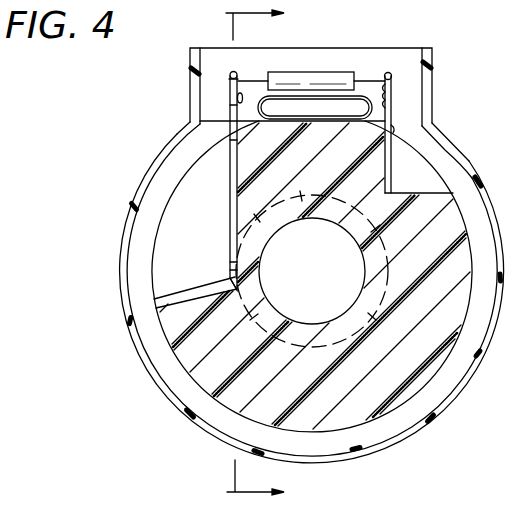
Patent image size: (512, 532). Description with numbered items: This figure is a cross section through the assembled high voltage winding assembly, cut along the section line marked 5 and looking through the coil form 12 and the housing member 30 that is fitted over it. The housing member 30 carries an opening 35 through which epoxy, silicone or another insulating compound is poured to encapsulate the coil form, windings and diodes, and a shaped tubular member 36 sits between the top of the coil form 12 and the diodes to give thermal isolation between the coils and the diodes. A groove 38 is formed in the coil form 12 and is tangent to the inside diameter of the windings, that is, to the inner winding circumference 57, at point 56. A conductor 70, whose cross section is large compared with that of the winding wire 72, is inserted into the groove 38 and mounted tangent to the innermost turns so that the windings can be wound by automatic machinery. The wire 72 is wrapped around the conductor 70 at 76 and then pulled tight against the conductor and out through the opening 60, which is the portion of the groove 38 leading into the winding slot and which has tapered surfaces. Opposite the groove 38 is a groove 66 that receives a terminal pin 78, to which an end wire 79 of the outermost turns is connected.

The section line 5- 5 is at (264, 253).
The coil form 12 is at (190, 404).
The housing member 30 is at (147, 363).
The opening 35 is at (426, 49).
The shaped tubular member 36 is at (368, 95).
The groove 38 is at (160, 222).
The point 56 is at (230, 266).
The inner winding circumference 57 is at (388, 277).
The opening 60 is at (229, 270).
The groove 66 is at (452, 172).
The conductor 70 is at (229, 103).
The wire 72 is at (231, 192).
The wrap point 76 is at (229, 111).
The terminal pin 78 is at (400, 160).
The end wire 79 is at (397, 133).